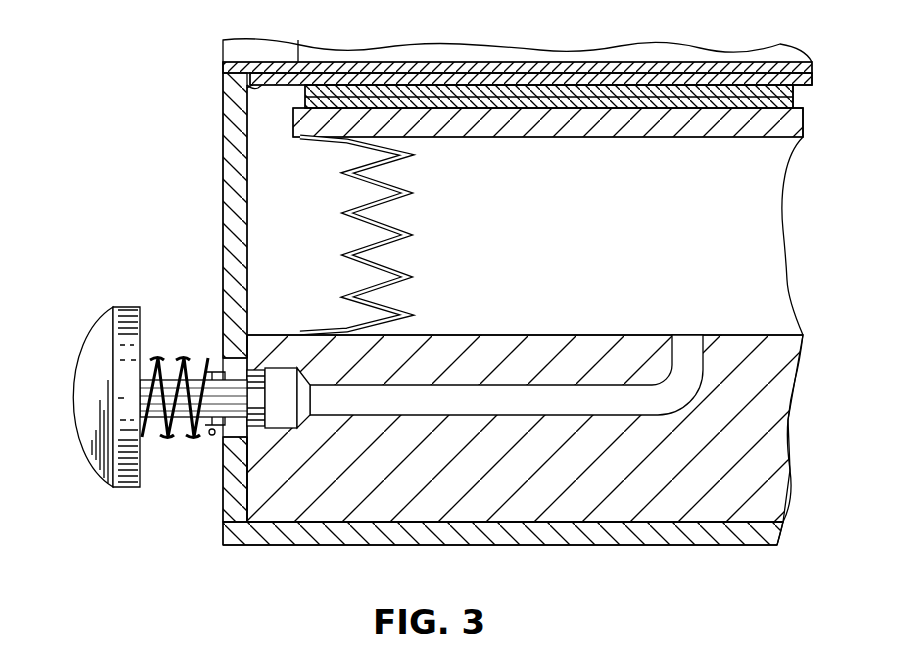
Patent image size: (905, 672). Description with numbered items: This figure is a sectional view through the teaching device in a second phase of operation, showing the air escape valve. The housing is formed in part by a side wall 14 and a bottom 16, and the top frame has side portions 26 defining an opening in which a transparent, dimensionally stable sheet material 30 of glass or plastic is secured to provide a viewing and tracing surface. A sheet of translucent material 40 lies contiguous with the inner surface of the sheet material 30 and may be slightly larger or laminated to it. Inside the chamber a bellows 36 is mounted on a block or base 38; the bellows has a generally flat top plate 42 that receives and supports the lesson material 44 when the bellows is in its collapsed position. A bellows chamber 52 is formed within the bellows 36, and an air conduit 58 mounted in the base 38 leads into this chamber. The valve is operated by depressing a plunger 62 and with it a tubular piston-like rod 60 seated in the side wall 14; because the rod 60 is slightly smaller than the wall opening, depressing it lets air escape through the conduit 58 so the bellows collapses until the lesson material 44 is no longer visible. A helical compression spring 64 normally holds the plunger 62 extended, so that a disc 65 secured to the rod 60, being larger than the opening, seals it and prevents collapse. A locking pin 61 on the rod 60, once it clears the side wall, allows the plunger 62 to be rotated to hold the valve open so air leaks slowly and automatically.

The side wall 14 is at (228, 214).
The bottom 16 is at (590, 547).
The side portion 26 is at (228, 62).
The transparent dimensionally stable sheet material 30 is at (773, 68).
The bellows 36 is at (362, 250).
The block or base 38 is at (534, 474).
The translucent sheet material 40 is at (812, 79).
The top plate 42 is at (650, 138).
The lesson material 44 is at (797, 96).
The bellows chamber 52 is at (576, 238).
The air conduit 58 is at (688, 338).
The tubular piston-like rod 60 is at (190, 365).
The locking pin 61 is at (215, 370).
The plunger 62 is at (95, 362).
The helical compression spring 64 is at (186, 432).
The disc 65 is at (266, 430).